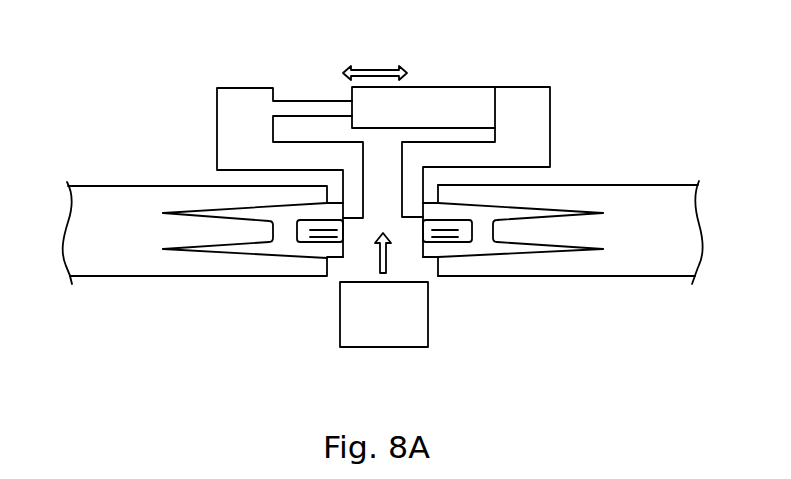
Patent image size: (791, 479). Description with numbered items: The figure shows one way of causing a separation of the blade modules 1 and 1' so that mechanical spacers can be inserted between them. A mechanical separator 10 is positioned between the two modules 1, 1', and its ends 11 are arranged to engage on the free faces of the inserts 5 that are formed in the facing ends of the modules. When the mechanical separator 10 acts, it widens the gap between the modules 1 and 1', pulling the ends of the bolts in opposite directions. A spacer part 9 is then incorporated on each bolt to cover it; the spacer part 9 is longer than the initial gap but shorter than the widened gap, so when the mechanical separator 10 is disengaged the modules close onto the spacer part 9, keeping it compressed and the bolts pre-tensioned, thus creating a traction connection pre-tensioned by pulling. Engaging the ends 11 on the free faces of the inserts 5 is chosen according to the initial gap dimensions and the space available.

The module 1 is at (193, 206).
The module 1' is at (563, 189).
The insert 5 is at (240, 235).
The spacer part 9 is at (428, 318).
The mechanical separator 10 is at (387, 113).
The end of the mechanical separator 11 is at (360, 172).